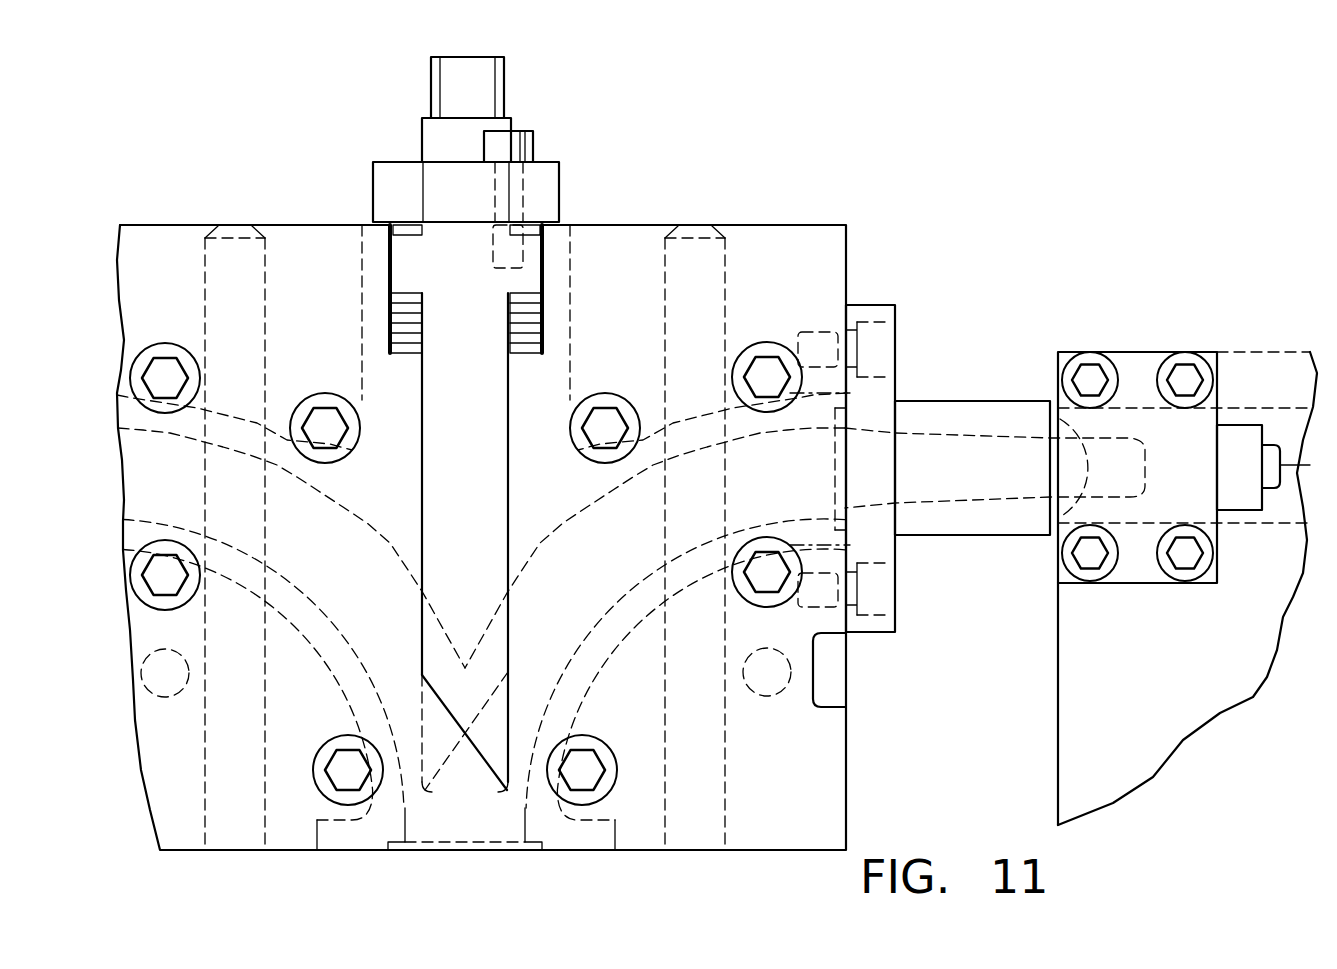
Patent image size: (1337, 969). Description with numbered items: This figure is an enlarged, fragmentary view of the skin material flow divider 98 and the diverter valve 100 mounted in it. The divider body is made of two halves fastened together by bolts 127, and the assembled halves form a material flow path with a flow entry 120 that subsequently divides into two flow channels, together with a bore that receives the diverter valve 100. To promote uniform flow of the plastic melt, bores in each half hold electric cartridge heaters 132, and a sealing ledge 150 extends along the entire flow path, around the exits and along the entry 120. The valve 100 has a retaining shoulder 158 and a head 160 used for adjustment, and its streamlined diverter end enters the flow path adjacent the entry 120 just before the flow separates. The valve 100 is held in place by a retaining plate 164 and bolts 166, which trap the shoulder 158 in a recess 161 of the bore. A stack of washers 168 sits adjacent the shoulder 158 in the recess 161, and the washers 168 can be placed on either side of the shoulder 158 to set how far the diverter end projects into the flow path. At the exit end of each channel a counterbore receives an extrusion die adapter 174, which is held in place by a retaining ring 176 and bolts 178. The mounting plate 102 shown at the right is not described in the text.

The flow divider 98 is at (823, 797).
The diverter valve 100 is at (486, 450).
The mounting plate 102 is at (1174, 680).
The flow entry 120 is at (443, 823).
The bolts 127 is at (183, 373).
The electric cartridge heaters 132 is at (703, 268).
The sealing ledge 150 is at (577, 827).
The retaining shoulder 158 is at (407, 260).
The head 160 is at (457, 73).
The recess 161 is at (535, 270).
The retaining plate 164 is at (560, 177).
The bolts 166 is at (533, 143).
The stack of washers 168 is at (542, 243).
The extrusion die adapter 174 is at (968, 420).
The retaining ring 176 is at (887, 395).
The bolts 178 is at (898, 290).